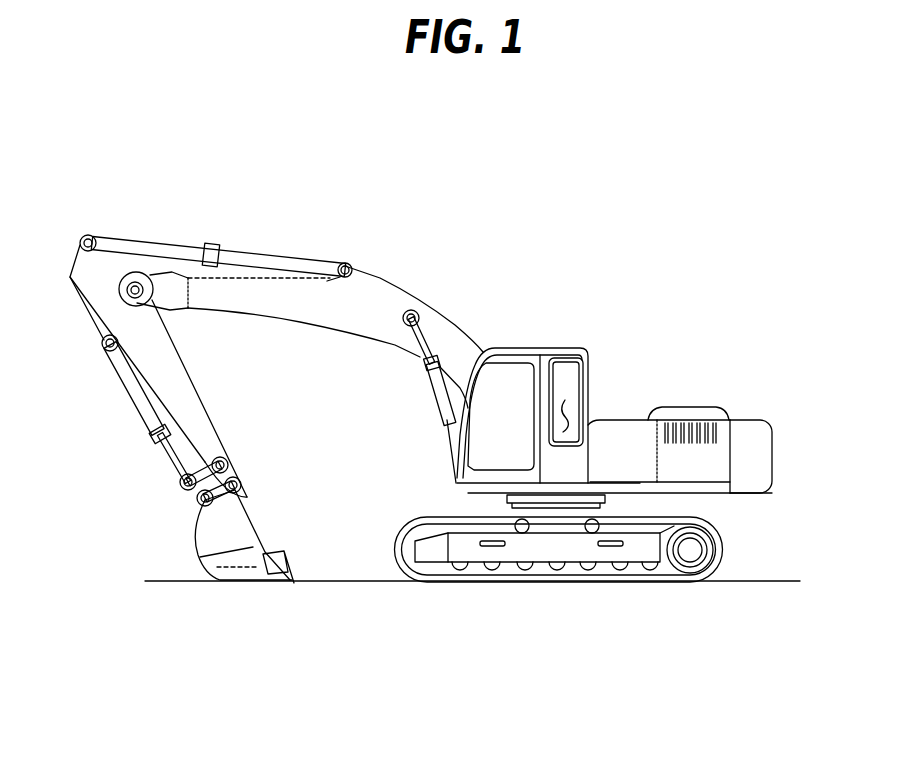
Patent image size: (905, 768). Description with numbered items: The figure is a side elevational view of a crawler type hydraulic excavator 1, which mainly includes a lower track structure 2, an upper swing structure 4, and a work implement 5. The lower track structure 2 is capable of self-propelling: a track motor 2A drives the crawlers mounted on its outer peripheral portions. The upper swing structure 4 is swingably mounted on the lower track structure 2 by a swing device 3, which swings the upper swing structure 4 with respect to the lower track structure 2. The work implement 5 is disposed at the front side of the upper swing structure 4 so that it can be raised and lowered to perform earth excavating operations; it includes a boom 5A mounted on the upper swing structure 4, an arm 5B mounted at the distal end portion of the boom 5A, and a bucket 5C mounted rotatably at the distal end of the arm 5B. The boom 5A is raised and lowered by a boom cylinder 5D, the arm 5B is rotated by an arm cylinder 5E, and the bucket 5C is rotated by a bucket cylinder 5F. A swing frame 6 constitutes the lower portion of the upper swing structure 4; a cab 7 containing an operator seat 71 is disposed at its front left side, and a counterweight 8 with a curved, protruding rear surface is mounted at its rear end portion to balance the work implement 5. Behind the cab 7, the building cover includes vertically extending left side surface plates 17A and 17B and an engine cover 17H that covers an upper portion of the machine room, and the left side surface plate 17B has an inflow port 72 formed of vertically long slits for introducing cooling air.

The hydraulic excavator 1 is at (500, 266).
The lower track structure 2 is at (594, 581).
The track motor 2A is at (683, 558).
The swing device 3 is at (607, 500).
The upper swing structure 4 is at (606, 384).
The work implement 5 is at (310, 208).
The boom 5A is at (410, 288).
The arm 5B is at (182, 387).
The bucket 5C is at (200, 553).
The boom cylinder 5D is at (433, 383).
The arm cylinder 5E is at (275, 252).
The bucket cylinder 5F is at (130, 390).
The swing frame 6 is at (467, 487).
The cab 7 is at (537, 350).
The operator seat 71 is at (565, 400).
The inflow port 72 is at (710, 422).
The counterweight 8 is at (762, 447).
The left side surface plate 17A is at (620, 432).
The left side surface plate 17B is at (727, 423).
The engine cover 17H is at (695, 407).